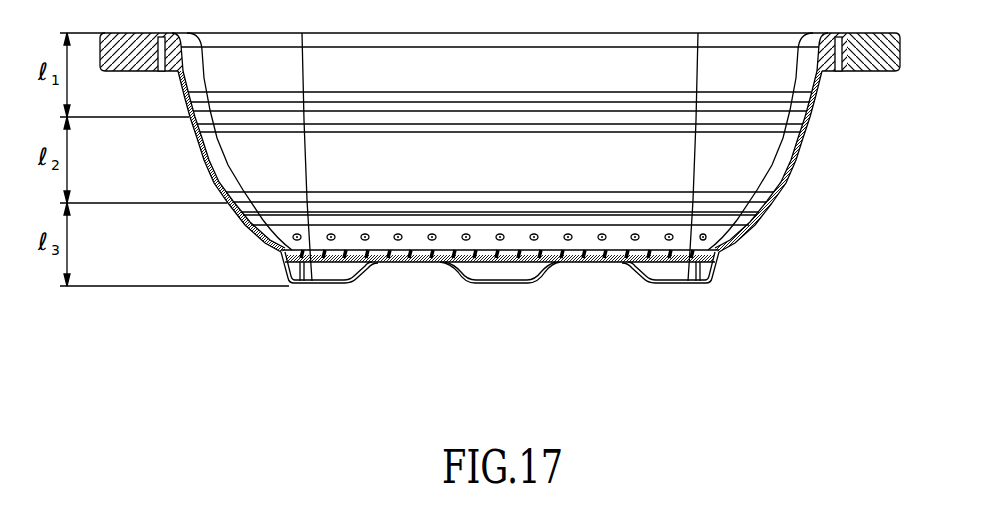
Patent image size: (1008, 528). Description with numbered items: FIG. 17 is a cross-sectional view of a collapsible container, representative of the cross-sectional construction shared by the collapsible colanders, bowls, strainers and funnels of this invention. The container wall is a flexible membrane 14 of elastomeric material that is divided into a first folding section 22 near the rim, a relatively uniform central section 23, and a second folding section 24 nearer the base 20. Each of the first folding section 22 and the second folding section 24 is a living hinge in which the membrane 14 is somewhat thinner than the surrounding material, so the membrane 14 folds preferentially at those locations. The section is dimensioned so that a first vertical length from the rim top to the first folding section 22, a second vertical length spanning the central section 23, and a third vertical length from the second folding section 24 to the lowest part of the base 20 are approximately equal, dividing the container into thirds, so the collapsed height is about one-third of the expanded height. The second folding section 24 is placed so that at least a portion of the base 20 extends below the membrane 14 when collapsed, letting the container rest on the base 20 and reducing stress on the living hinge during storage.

The flexible membrane 14 is at (487, 169).
The base 20 is at (718, 278).
The first folding section 22 is at (815, 118).
The relatively uniform section 23 is at (797, 165).
The second folding section 24 is at (776, 202).